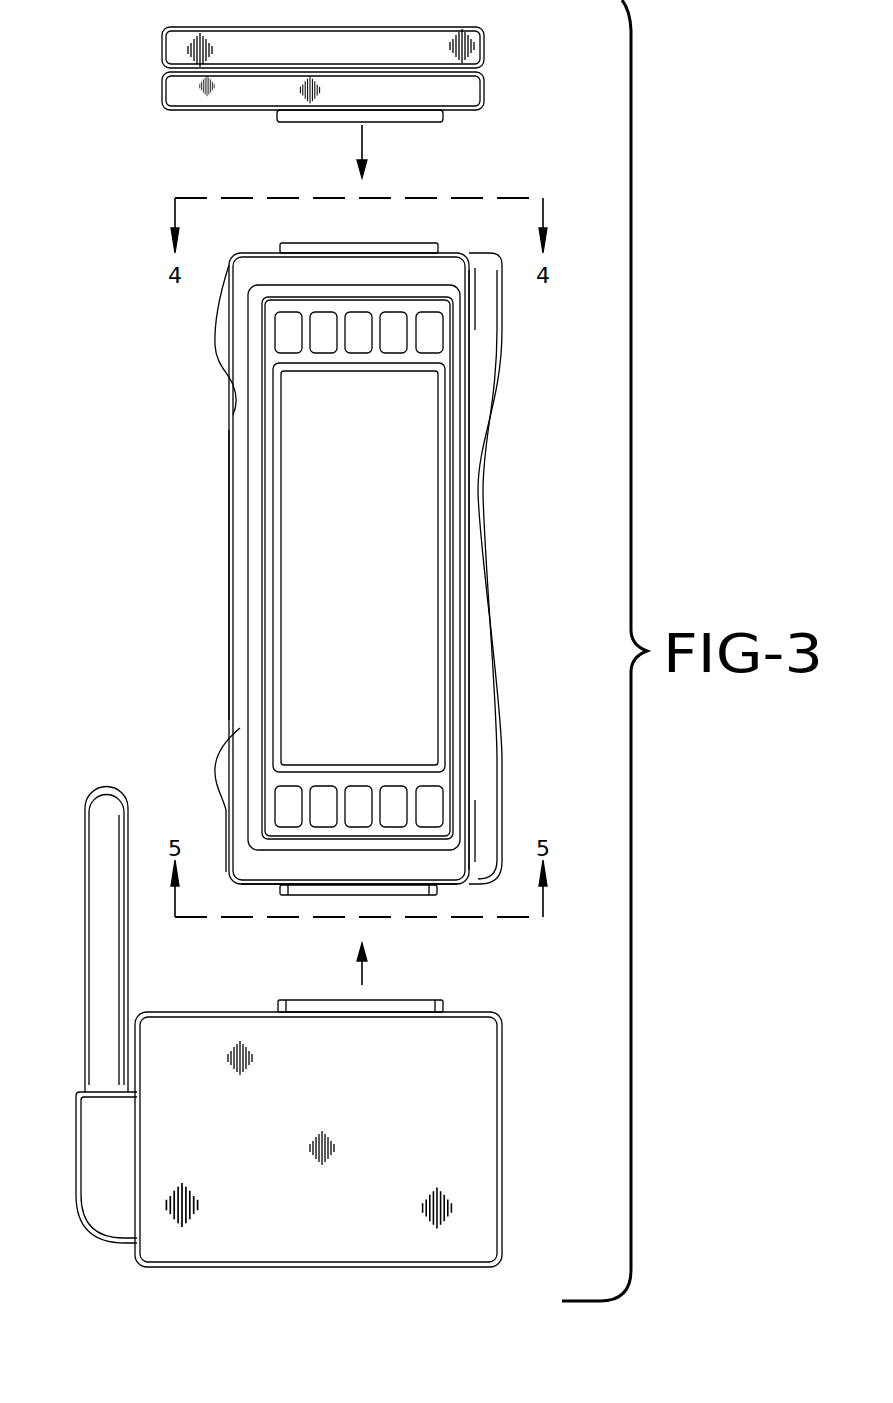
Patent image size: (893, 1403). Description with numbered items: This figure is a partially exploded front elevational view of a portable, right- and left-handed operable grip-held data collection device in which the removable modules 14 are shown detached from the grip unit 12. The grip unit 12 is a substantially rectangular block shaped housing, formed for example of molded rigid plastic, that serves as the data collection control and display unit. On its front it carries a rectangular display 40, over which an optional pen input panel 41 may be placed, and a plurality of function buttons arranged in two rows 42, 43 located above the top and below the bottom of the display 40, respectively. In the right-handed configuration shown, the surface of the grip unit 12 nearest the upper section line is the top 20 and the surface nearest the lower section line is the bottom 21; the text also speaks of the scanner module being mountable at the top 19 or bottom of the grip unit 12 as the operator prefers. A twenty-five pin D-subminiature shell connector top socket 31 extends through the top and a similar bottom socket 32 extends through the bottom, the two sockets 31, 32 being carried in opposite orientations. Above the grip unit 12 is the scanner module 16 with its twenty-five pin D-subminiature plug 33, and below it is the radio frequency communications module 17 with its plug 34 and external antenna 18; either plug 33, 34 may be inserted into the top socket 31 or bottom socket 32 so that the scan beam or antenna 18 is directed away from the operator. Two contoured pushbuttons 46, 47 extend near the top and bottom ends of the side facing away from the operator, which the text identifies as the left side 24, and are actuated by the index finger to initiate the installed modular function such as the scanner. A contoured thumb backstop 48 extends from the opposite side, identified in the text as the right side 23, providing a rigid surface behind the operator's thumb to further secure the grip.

The grip unit 12 is at (355, 591).
The removable modules 14 is at (305, 672).
The scanner module 16 is at (178, 91).
The radio frequency communications module 17 is at (467, 1097).
The external antenna 18 is at (105, 829).
The top 19 is at (265, 252).
The top 20 is at (456, 888).
The bottom 21 is at (452, 356).
The back 23 is at (470, 487).
The right side 24 is at (250, 562).
The top socket 31 is at (402, 250).
The bottom socket 32 is at (298, 890).
The plug 33 is at (402, 118).
The plug 34 is at (310, 1003).
The rectangular display 40 is at (440, 586).
The pen input panel 41 is at (416, 567).
The row of function buttons 42 is at (447, 330).
The row of function buttons 43 is at (290, 792).
The contoured pushbutton 46 is at (218, 347).
The contoured pushbutton 47 is at (218, 788).
The contoured thumb backstop 48 is at (487, 398).